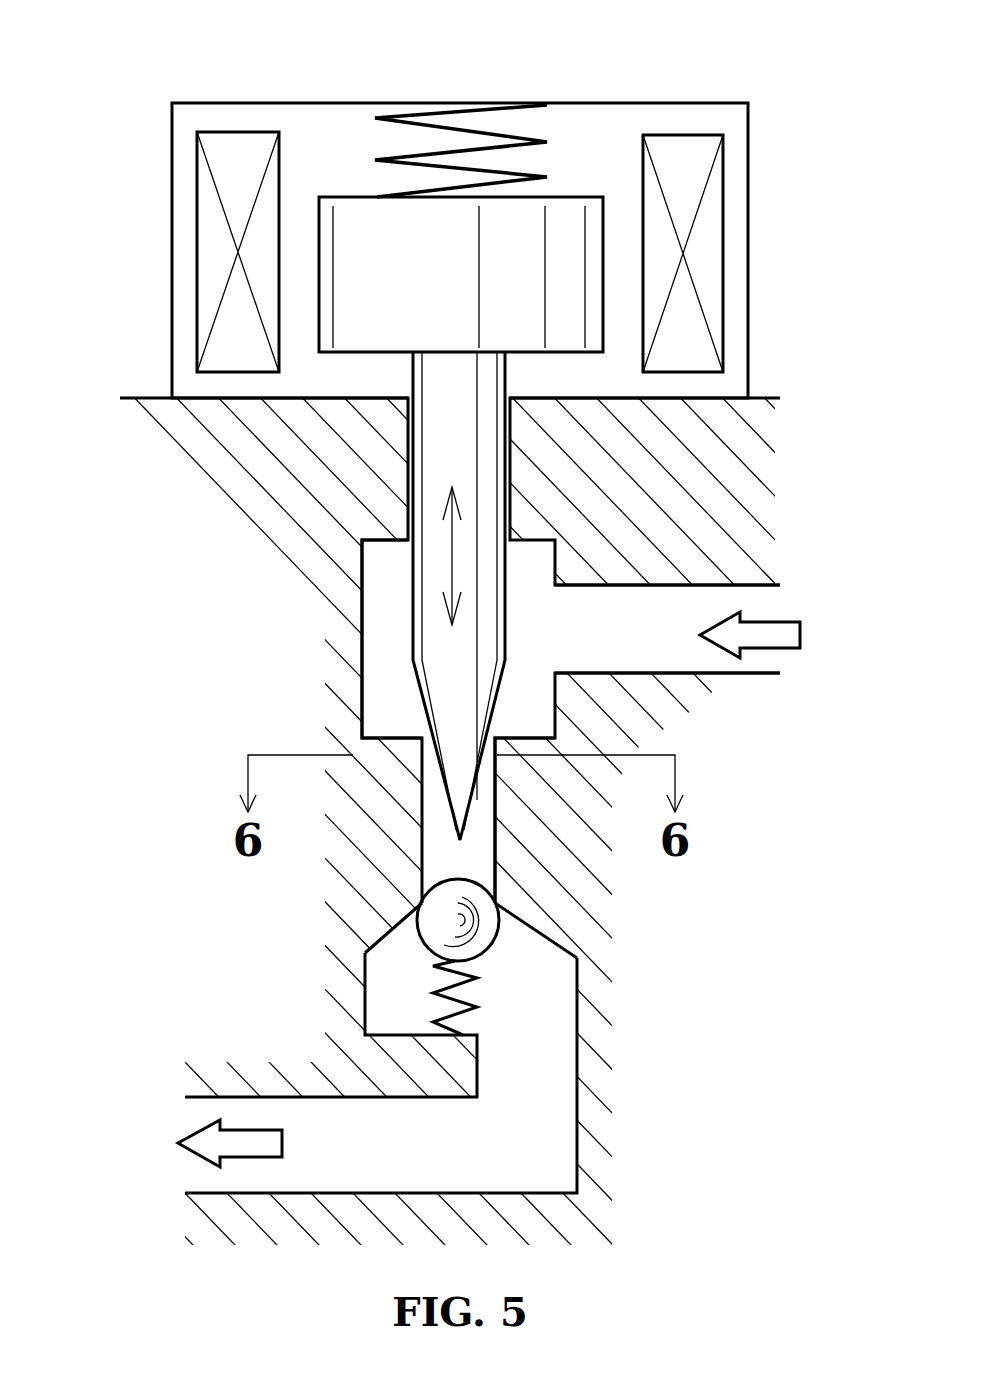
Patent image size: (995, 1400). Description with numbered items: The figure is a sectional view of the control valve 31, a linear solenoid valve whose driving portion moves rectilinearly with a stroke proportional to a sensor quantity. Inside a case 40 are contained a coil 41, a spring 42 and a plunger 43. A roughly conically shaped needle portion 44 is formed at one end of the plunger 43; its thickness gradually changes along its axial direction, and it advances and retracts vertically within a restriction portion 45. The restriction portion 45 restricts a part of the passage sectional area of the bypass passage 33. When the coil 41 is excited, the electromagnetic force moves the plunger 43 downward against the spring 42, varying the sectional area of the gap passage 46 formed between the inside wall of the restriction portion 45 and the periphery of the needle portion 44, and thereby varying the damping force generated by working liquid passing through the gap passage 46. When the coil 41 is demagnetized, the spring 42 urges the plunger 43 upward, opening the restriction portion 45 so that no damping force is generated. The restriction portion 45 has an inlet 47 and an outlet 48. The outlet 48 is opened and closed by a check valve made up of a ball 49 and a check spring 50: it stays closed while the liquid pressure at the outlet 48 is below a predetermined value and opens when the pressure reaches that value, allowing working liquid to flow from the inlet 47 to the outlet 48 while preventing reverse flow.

The control valve 31 is at (414, 199).
The bypass passage 33 is at (668, 637).
The case 40 is at (250, 100).
The coil 41 is at (213, 265).
The spring 42 is at (472, 130).
The plunger 43 is at (522, 243).
The needle portion 44 is at (450, 812).
The restriction portion 45 is at (388, 737).
The gap passage 46 is at (496, 737).
The inlet 47 is at (553, 612).
The outlet 48 is at (415, 900).
The ball 49 is at (478, 938).
The check spring 50 is at (435, 993).